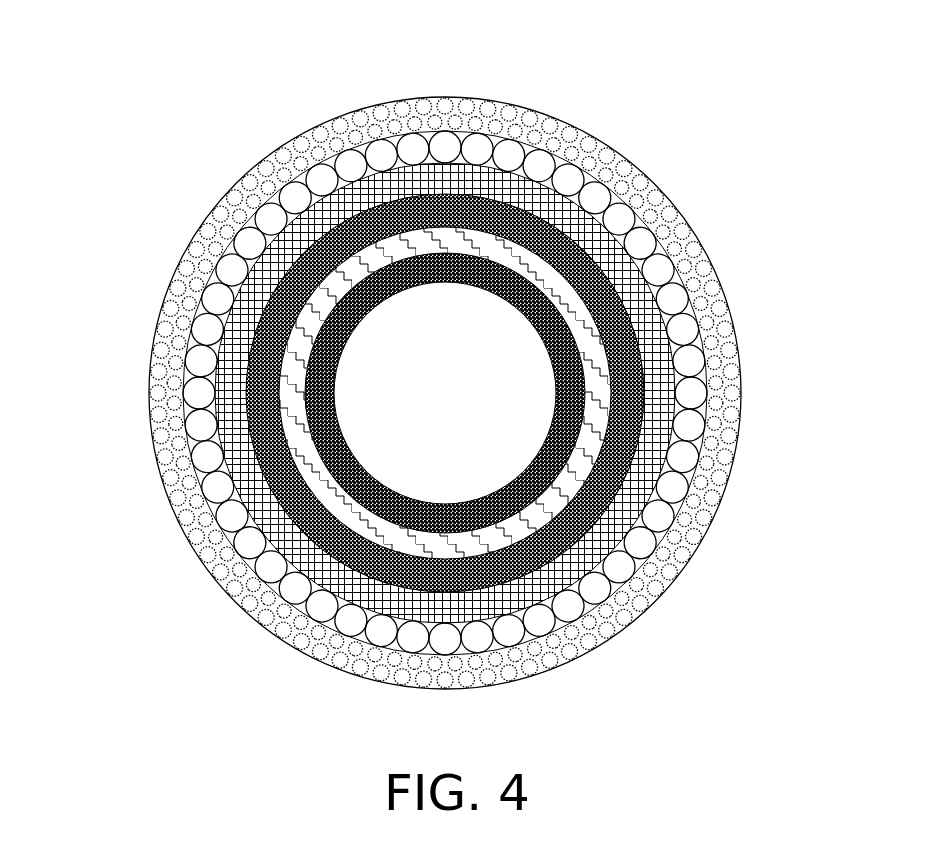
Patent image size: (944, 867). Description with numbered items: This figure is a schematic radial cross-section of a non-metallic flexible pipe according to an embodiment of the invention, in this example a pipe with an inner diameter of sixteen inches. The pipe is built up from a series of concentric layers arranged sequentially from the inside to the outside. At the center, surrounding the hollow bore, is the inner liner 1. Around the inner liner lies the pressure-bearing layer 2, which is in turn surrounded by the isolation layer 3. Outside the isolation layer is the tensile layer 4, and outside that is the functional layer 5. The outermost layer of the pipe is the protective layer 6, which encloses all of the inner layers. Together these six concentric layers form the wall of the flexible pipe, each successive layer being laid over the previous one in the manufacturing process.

The inner liner 1 is at (323, 383).
The pressure-bearing layer 2 is at (343, 273).
The isolation layer 3 is at (427, 213).
The tensile layer 4 is at (520, 203).
The functional layer 5 is at (638, 233).
The protective layer 6 is at (715, 325).